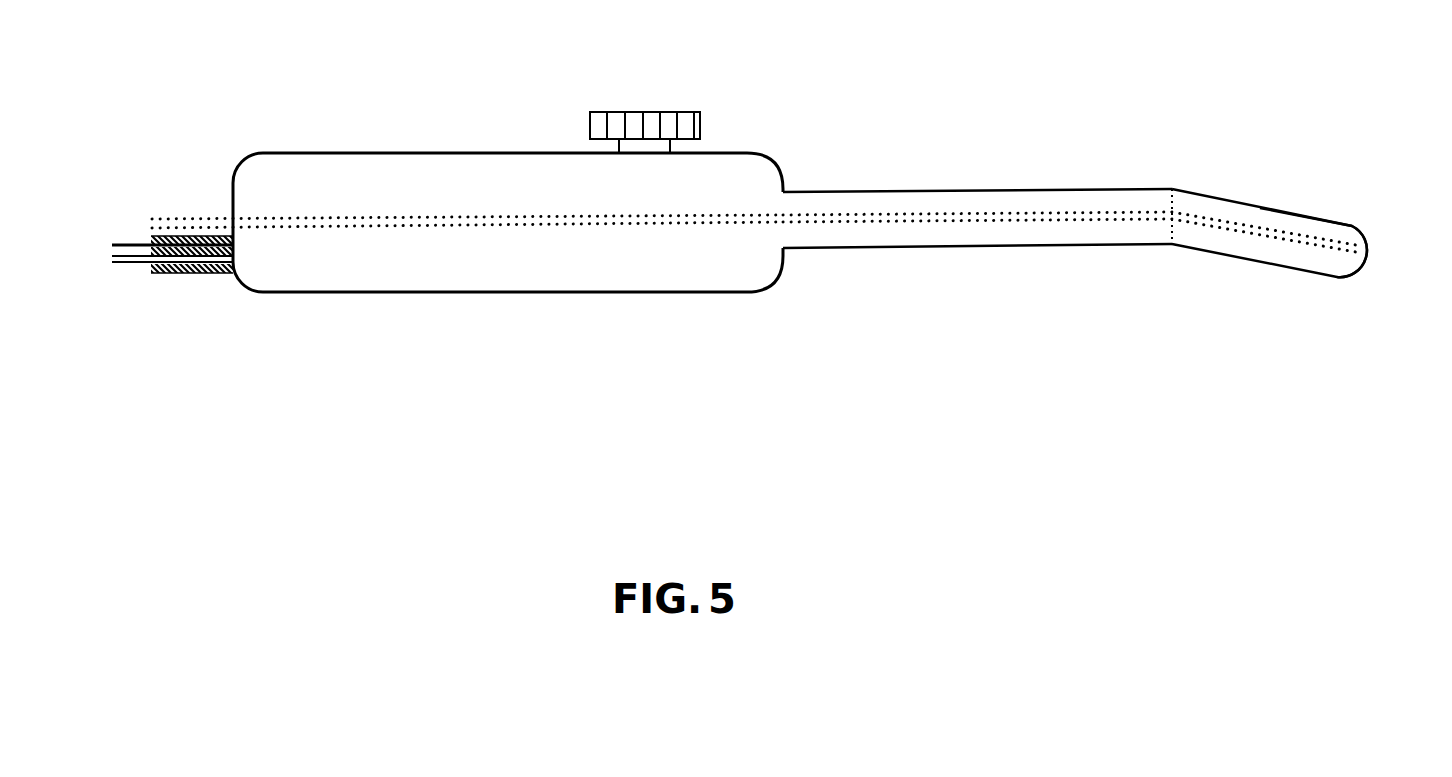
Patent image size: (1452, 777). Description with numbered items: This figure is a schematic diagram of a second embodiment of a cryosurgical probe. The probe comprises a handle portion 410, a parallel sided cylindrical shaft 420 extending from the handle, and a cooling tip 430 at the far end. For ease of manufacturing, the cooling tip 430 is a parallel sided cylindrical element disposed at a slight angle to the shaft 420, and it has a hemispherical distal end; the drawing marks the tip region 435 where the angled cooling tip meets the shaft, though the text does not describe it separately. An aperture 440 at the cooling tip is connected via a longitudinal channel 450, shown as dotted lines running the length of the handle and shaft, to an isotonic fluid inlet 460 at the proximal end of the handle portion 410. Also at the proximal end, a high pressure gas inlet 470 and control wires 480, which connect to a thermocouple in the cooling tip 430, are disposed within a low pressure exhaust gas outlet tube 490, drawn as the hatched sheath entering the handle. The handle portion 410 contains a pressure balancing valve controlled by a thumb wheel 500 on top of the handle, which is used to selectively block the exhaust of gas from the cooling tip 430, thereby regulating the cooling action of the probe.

The handle portion 410 is at (452, 293).
The parallel sided cylindrical shaft 420 is at (953, 247).
The cooling tip 430 is at (1350, 200).
The tip upper surface 435 is at (1353, 225).
The aperture 440 is at (1367, 252).
The longitudinal channel 450 is at (937, 212).
The isotonic fluid inlet 460 is at (190, 220).
The high pressure gas inlet 470 is at (128, 263).
The control wires 480 is at (128, 242).
The low pressure exhaust gas outlet tube 490 is at (188, 275).
The thumb wheel 500 is at (678, 110).